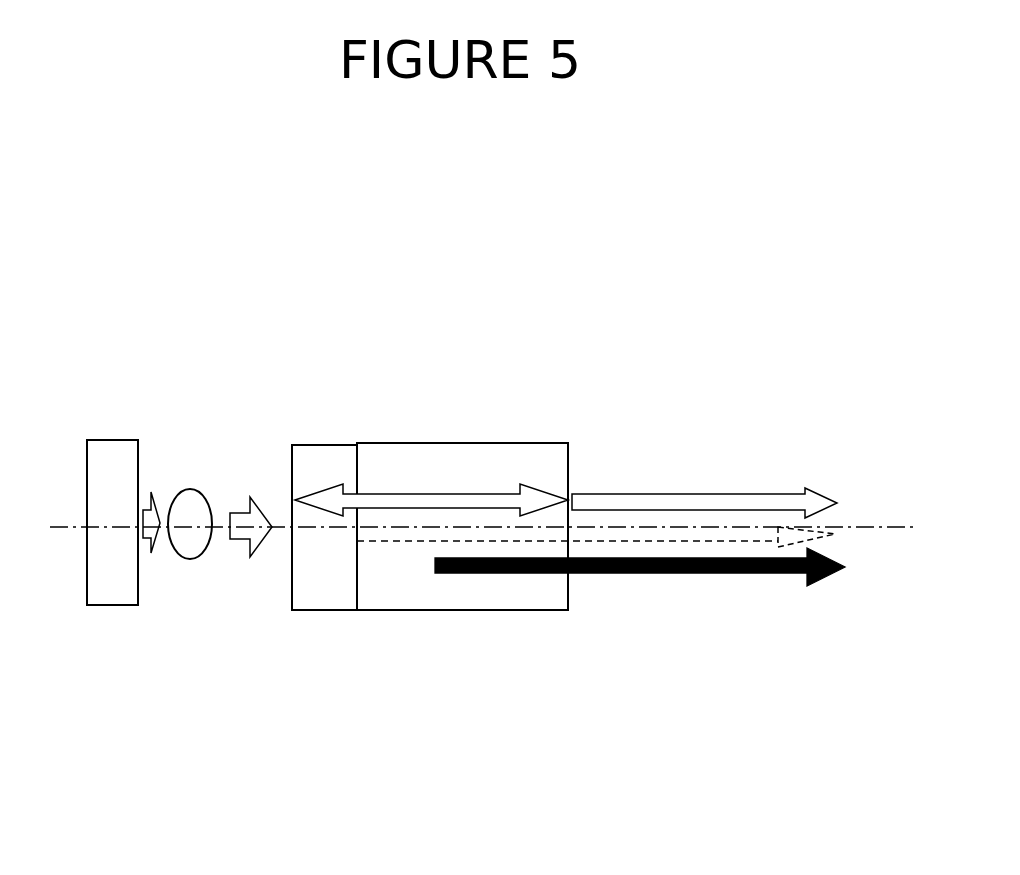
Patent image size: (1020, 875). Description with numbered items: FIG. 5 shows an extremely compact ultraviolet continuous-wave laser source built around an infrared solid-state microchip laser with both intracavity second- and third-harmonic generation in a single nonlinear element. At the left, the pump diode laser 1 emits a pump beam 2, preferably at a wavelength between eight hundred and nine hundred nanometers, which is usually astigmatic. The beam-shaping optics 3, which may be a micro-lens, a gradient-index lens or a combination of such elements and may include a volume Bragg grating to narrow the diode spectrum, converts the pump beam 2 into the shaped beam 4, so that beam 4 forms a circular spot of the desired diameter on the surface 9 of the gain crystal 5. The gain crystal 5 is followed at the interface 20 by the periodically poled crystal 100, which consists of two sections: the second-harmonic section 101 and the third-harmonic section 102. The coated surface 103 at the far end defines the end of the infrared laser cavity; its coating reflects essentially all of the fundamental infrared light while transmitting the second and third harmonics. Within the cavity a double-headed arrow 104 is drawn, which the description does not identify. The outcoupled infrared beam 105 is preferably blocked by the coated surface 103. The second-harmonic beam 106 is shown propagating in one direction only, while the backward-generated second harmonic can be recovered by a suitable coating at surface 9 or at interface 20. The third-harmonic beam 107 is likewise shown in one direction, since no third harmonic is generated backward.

The pump diode laser 1 is at (111, 452).
The pump beam 2 is at (152, 483).
The beam-shaping optics 3 is at (190, 470).
The shaped pump beam 4 is at (254, 480).
The gain crystal 5 is at (337, 468).
The surface of gain crystal 9 is at (288, 588).
The interface 20 is at (350, 590).
The periodically poled crystal 100 is at (477, 423).
The second-harmonic section 101 is at (412, 470).
The third-harmonic section 102 is at (575, 445).
The coated surface 103 is at (575, 608).
The oscillating laser beam inside the medium 104 is at (387, 502).
The outcoupled infrared beam 105 is at (717, 490).
The second-harmonic beam 106 is at (620, 531).
The third-harmonic beam 107 is at (649, 574).